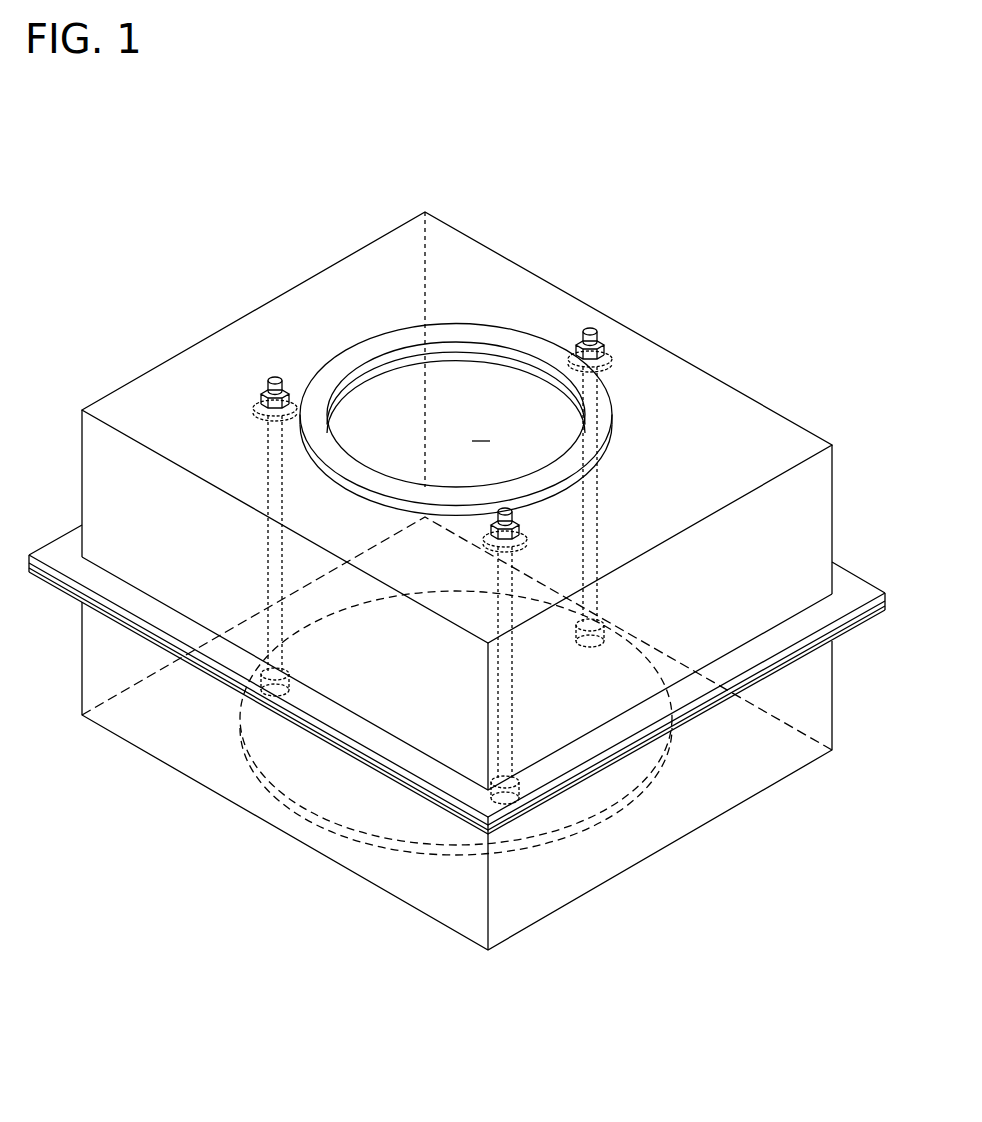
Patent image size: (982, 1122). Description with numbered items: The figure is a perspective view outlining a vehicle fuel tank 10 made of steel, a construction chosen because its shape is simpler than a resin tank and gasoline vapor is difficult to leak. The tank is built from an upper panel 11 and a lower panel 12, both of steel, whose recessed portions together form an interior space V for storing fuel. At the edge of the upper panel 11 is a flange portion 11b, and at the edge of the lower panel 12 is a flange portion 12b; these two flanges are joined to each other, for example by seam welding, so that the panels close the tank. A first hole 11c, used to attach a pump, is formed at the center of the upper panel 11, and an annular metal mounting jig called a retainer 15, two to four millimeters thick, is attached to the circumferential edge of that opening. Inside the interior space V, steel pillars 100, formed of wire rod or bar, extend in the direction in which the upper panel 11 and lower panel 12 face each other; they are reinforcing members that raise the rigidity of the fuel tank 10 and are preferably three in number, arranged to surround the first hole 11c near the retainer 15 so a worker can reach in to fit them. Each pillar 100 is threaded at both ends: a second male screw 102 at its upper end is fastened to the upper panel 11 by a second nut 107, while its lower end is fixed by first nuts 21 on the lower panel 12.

The fuel tank 10 is at (216, 185).
The upper panel 11 is at (467, 492).
The flange portion 11b is at (852, 585).
The first hole 11c is at (384, 360).
The lower panel 12 is at (82, 632).
The flange portion 12b is at (888, 605).
The retainer 15 is at (488, 337).
The first nuts 21 is at (302, 692).
The pillars 100 is at (397, 531).
The second male screw 102 is at (283, 378).
The second nuts 107 is at (253, 398).
The interior space V is at (481, 428).